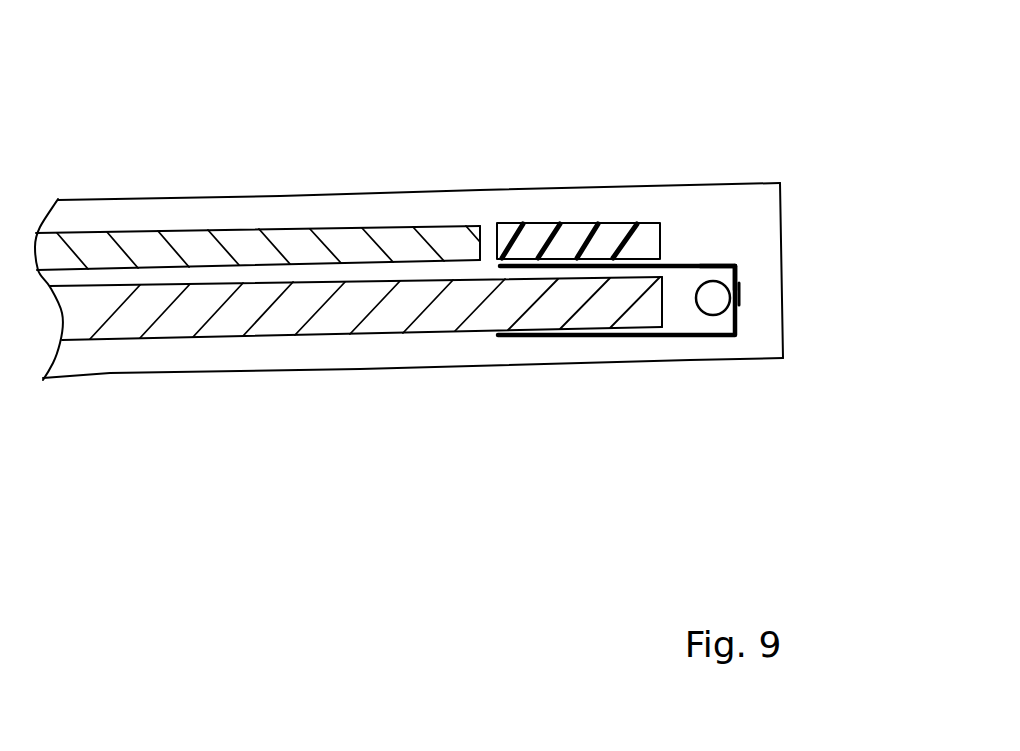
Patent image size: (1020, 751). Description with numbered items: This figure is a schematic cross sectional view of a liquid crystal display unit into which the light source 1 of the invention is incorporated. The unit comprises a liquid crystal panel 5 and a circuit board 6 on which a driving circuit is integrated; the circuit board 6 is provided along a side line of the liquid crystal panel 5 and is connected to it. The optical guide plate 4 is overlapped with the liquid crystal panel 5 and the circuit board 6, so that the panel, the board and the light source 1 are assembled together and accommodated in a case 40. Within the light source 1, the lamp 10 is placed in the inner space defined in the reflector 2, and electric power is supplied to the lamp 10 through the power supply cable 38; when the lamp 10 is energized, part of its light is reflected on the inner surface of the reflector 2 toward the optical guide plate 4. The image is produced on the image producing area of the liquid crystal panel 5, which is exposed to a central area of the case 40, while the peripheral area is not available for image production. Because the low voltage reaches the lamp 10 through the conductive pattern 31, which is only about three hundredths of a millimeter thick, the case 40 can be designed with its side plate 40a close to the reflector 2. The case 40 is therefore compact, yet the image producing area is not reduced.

The light source 1 is at (741, 349).
The reflector 2 is at (532, 337).
The optical guide plate 4 is at (242, 313).
The liquid crystal panel 5 is at (185, 247).
The circuit board 6 is at (570, 240).
The lamp 10 is at (697, 303).
The conductive pattern 31 is at (740, 303).
The power supply cable 38 is at (745, 277).
The case 40 is at (785, 196).
The side plate 40a is at (782, 217).